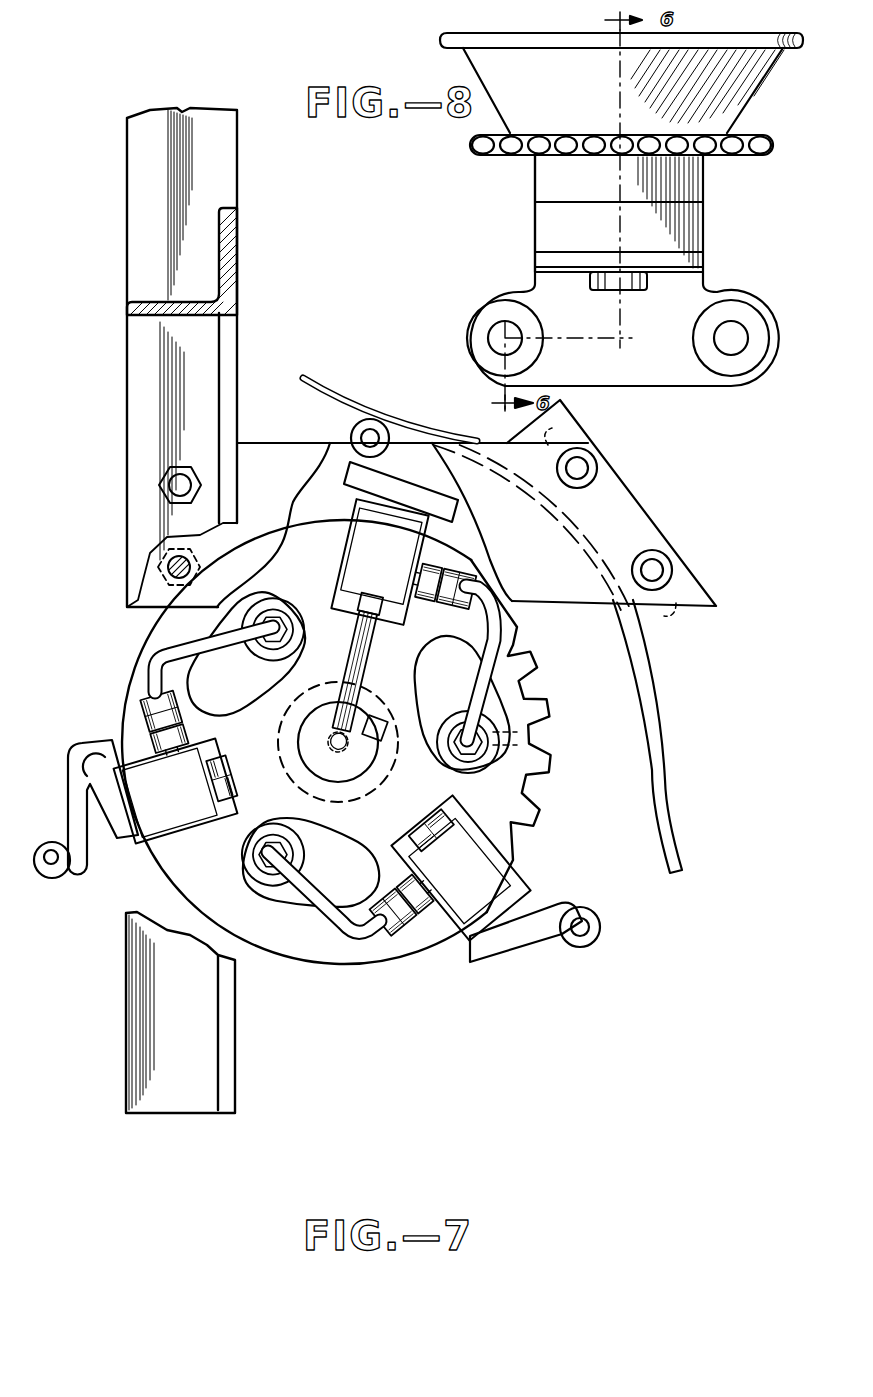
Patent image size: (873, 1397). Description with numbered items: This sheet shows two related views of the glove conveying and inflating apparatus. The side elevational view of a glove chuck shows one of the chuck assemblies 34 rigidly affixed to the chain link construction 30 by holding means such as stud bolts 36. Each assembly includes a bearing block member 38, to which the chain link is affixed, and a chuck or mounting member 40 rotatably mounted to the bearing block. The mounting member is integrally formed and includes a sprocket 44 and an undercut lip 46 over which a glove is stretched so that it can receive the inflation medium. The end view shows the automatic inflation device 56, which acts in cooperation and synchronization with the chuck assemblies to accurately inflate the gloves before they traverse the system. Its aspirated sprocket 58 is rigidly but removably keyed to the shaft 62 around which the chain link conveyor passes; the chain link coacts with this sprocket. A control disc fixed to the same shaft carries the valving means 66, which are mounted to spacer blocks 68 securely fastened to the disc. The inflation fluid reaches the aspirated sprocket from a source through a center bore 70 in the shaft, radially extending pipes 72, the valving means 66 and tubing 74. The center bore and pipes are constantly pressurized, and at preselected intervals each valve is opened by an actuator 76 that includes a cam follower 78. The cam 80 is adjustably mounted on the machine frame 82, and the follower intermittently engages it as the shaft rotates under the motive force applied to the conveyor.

In FIG. 8, the chain link construction 30 is at (534, 295).
In FIG. 8, the chuck assembly 34 is at (524, 183).
In FIG. 8, the stud bolt 36 is at (627, 288).
In FIG. 8, the bearing block member 38 is at (540, 225).
In FIG. 8, the chuck or mounting member 40 is at (695, 185).
In FIG. 8, the sprocket 44 is at (484, 150).
In FIG. 8, the undercut lip 46 is at (452, 38).
In FIG. 7, the automatic inflation device 56 is at (374, 988).
In FIG. 7, the aspirated sprocket 58 is at (535, 713).
In FIG. 7, the shaft 62 is at (362, 780).
In FIG. 7, the valving means 66 is at (152, 820).
In FIG. 7, the spacer block 68 is at (397, 626).
In FIG. 7, the center bore 70 is at (380, 760).
In FIG. 7, the radially extending pipe 72 is at (352, 652).
In FIG. 7, the tubing 74 is at (497, 630).
In FIG. 7, the actuator 76 is at (385, 475).
In FIG. 7, the cam follower 78 is at (384, 425).
In FIG. 7, the cam 80 is at (325, 387).
In FIG. 7, the machine frame 82 is at (237, 333).